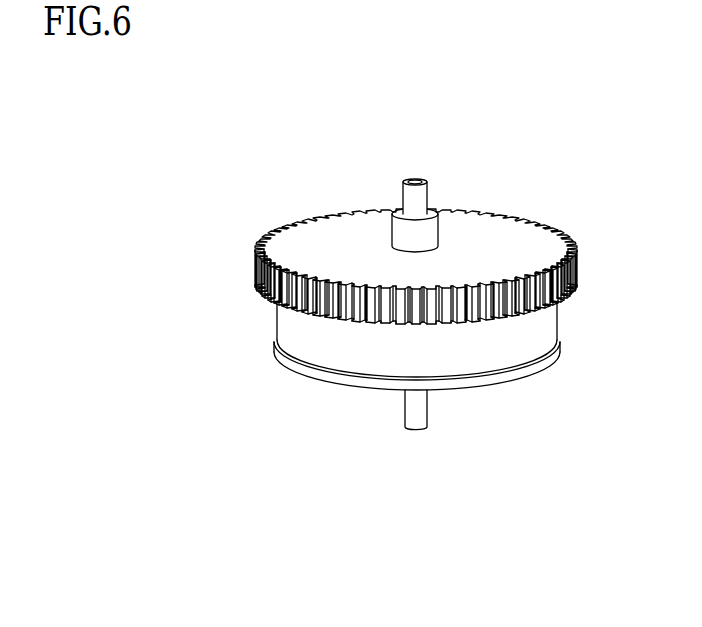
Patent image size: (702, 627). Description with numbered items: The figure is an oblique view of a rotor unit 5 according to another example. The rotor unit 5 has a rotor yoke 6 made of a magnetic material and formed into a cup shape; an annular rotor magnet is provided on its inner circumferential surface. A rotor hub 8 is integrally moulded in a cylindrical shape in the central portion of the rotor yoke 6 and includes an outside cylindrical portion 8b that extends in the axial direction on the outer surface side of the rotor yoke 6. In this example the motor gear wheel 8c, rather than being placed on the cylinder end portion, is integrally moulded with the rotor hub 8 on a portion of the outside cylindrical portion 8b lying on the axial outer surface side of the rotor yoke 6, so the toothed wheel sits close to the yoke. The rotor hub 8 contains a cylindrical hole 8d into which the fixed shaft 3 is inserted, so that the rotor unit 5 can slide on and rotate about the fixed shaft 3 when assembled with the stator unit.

The rotor unit 5 is at (271, 170).
The rotor hub 8 is at (365, 233).
The outside cylindrical portion 8b is at (433, 230).
The motor gear wheel 8c is at (256, 258).
The cylindrical hole 8d is at (417, 213).
The rotor yoke 6 is at (282, 320).
The fixed shaft 3 is at (427, 417).